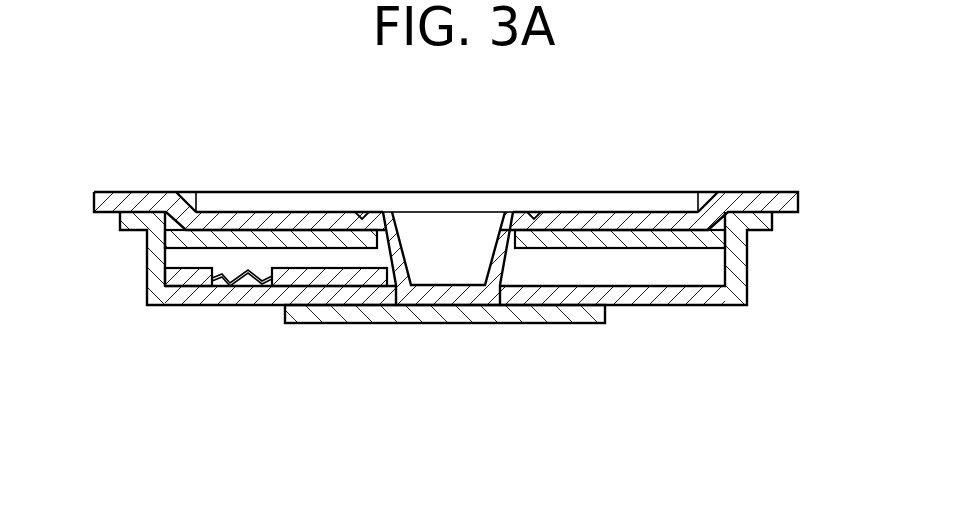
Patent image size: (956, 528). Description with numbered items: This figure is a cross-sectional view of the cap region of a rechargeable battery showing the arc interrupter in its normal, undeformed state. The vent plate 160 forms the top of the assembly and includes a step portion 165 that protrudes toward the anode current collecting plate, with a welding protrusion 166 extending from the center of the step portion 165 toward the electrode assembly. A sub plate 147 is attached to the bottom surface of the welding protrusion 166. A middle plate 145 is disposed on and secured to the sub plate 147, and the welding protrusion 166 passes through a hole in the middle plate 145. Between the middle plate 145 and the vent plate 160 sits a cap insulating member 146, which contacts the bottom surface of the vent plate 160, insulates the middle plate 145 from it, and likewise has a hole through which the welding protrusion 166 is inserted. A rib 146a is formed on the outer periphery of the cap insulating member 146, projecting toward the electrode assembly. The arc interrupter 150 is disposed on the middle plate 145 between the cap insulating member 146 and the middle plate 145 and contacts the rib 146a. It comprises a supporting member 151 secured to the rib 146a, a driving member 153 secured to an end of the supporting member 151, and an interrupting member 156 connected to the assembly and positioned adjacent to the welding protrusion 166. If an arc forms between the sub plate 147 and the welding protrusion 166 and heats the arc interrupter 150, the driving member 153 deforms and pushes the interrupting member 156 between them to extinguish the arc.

The middle plate 145 is at (676, 306).
The cap insulating member 146 is at (136, 268).
The rib 146a is at (158, 312).
The sub plate 147 is at (460, 324).
The arc interrupter 150 is at (276, 358).
The supporting member 151 is at (197, 284).
The driving member 153 is at (263, 284).
The interrupting member 156 is at (329, 336).
The vent plate 160 is at (772, 188).
The step portion 165 is at (700, 204).
The welding protrusion 166 is at (402, 249).